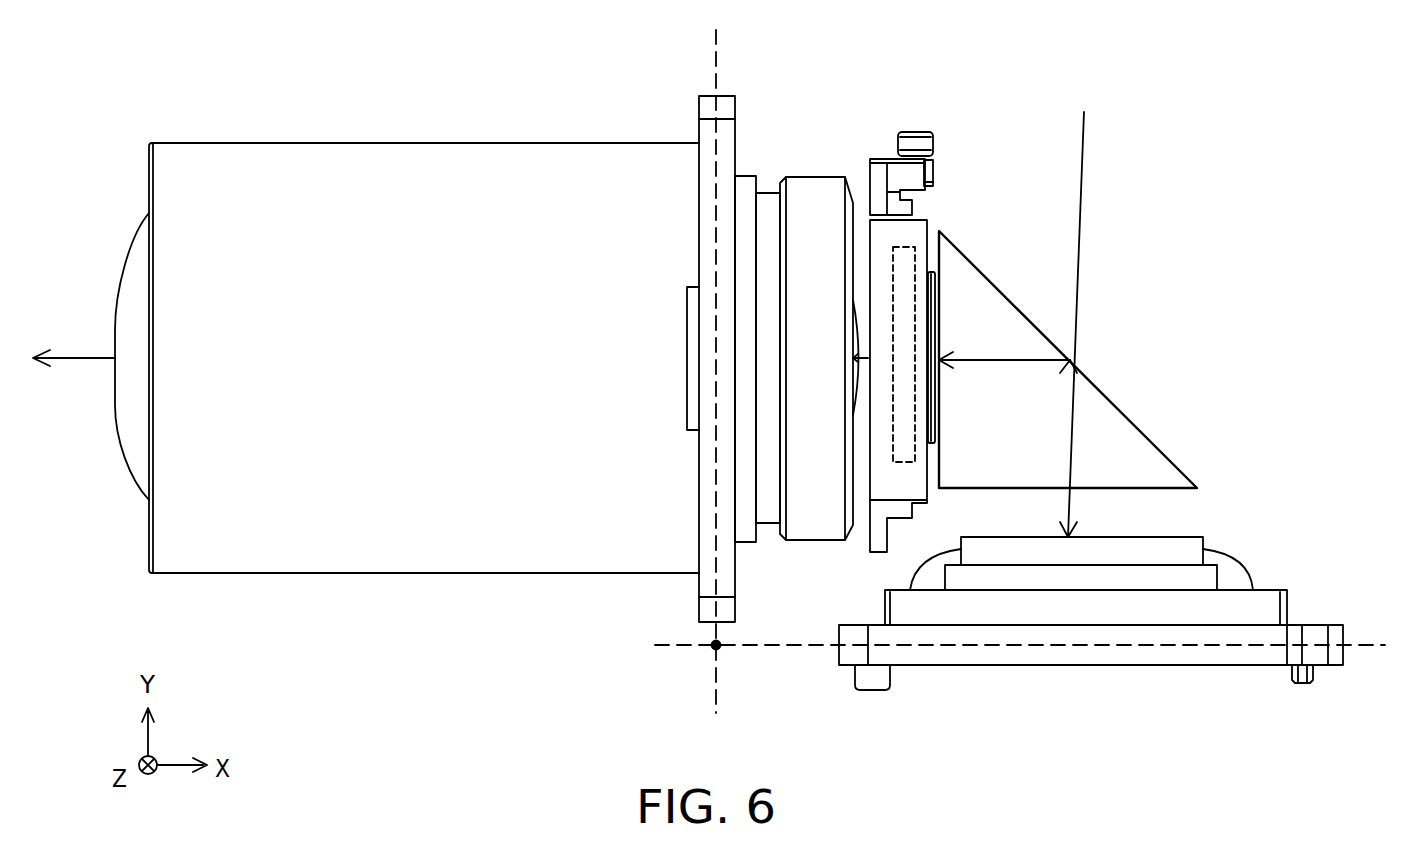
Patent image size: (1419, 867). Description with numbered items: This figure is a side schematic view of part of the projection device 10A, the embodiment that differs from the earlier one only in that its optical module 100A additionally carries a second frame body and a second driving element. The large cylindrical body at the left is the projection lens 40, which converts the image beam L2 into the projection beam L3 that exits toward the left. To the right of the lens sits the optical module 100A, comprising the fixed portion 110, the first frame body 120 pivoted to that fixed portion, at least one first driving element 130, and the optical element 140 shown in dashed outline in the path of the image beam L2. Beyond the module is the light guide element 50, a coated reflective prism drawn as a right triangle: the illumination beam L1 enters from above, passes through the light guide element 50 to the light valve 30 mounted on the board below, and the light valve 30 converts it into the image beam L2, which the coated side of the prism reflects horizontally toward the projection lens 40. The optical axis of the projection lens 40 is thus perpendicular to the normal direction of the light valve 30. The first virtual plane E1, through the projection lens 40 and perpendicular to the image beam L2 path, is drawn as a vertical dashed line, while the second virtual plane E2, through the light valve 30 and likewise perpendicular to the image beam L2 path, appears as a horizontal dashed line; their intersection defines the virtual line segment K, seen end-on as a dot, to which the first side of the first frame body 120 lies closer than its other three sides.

The projection device 10A is at (1250, 202).
The light valve 30 is at (1313, 636).
The projection lens 40 is at (610, 148).
The light guide element 50 is at (1137, 445).
The optical module 100A is at (860, 133).
The fixed portion 110 is at (881, 481).
The first frame body 120 is at (878, 182).
The first driving element 130 is at (913, 143).
The optical element 140 is at (900, 247).
The illumination beam L1 is at (1081, 177).
The image beam L2 is at (1008, 357).
The projection beam L3 is at (60, 357).
The first virtual plane E1 is at (718, 57).
The second virtual plane E2 is at (1372, 633).
The virtual line segment K is at (712, 650).